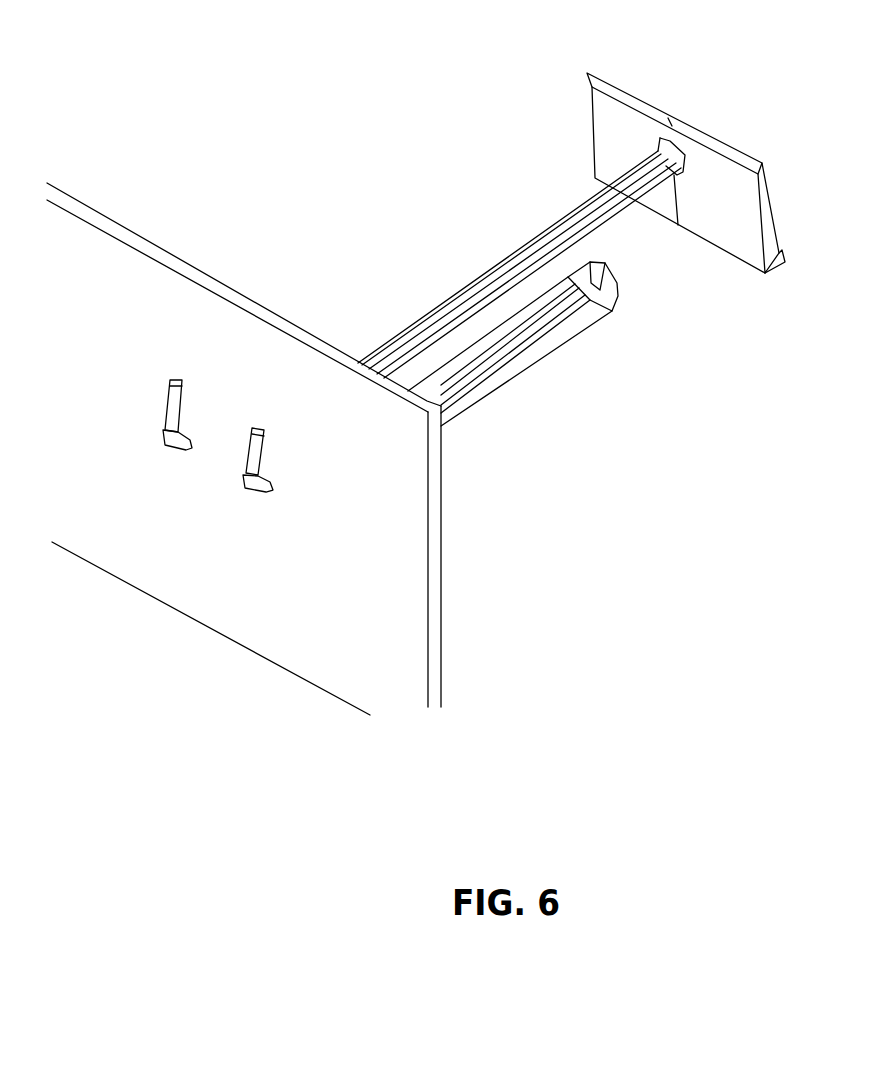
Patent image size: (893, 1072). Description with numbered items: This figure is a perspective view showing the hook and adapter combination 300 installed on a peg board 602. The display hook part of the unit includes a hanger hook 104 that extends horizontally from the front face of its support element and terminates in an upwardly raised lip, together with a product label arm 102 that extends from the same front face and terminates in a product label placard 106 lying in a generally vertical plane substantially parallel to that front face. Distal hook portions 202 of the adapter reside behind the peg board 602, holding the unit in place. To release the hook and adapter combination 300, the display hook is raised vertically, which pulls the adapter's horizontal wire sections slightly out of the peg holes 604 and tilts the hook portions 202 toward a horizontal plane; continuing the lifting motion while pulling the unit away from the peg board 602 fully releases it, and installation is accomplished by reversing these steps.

The product label arm 102 is at (449, 293).
The hanger hook 104 is at (575, 336).
The product label placard 106 is at (648, 92).
The distal hook portions 202 is at (163, 428).
The hook and adapter combination 300 is at (398, 250).
The peg board 602 is at (468, 612).
The peg holes 604 is at (243, 480).